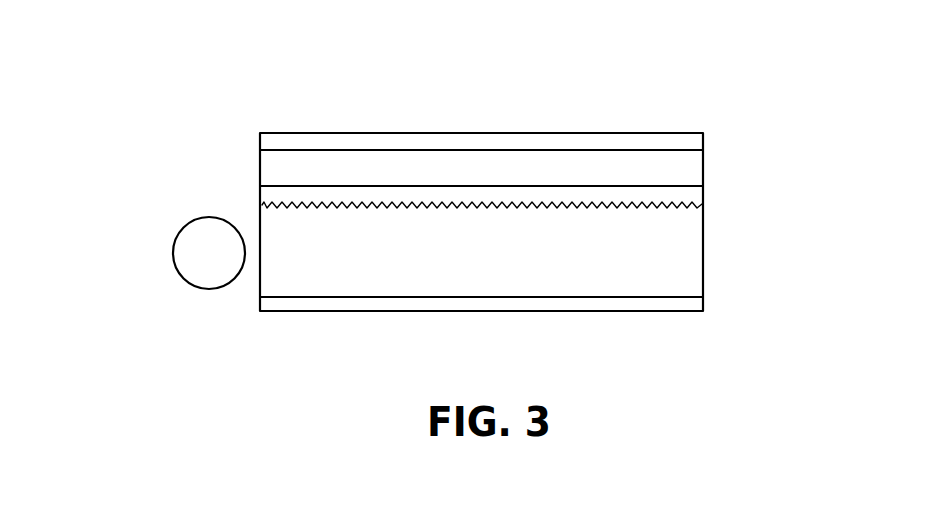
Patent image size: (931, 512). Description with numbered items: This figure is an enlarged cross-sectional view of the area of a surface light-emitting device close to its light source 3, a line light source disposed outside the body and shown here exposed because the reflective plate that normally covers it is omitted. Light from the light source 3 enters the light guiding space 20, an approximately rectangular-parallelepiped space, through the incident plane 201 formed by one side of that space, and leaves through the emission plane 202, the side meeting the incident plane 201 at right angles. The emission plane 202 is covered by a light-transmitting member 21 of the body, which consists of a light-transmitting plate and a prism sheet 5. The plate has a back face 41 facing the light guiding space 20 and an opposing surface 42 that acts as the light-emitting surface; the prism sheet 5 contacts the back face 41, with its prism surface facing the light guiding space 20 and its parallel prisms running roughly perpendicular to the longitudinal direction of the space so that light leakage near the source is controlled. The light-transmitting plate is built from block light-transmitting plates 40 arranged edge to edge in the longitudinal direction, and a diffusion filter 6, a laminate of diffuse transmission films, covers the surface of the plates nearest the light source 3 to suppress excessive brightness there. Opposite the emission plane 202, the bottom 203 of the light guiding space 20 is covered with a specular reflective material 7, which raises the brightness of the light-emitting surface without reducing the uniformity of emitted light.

The light source 3 is at (210, 244).
The prism sheet 5 is at (637, 198).
The diffusion filter 6 is at (319, 140).
The specular reflective material 7 is at (383, 305).
The light guiding space 20 is at (523, 265).
The light-transmitting member 21 is at (610, 124).
The block light-transmitting plate 40 is at (670, 165).
The back face 41 is at (568, 188).
The surface 42 is at (521, 150).
The incident plane 201 is at (261, 260).
The emission plane 202 is at (362, 208).
The bottom 203 is at (637, 295).